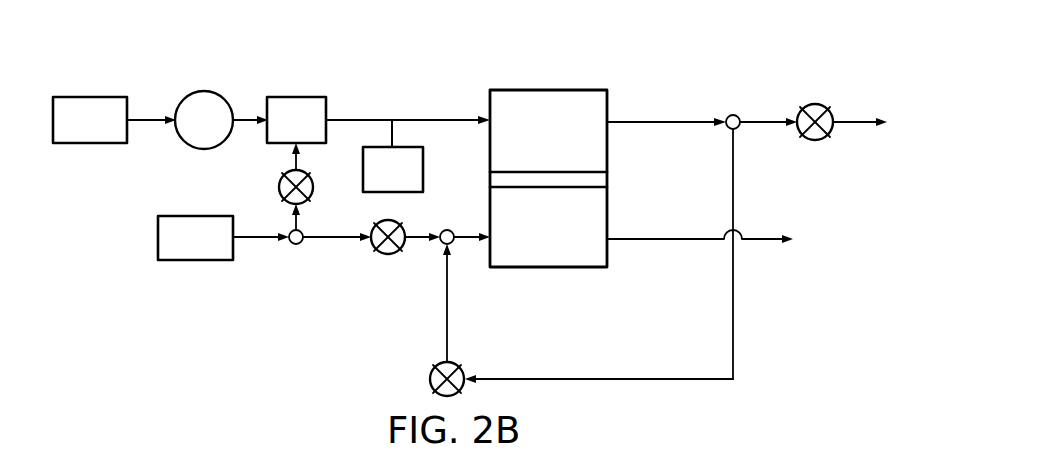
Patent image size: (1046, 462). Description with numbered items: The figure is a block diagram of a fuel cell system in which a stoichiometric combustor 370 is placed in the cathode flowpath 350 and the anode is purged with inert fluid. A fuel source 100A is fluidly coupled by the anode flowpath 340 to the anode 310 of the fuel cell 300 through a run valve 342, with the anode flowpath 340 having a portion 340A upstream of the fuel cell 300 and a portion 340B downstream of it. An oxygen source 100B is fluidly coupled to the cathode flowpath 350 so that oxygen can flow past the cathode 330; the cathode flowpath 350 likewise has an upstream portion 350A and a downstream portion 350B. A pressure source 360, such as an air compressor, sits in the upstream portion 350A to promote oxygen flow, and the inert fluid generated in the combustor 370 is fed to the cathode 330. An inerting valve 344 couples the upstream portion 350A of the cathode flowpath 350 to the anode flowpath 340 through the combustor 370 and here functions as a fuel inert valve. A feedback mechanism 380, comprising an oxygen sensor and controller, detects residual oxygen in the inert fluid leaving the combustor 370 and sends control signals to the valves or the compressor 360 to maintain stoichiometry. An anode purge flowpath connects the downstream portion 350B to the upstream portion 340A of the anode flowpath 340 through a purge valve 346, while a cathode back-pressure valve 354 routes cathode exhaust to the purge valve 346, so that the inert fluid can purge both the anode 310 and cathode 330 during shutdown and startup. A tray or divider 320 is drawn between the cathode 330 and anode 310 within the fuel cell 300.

The fuel source 100A is at (224, 251).
The oxygen source 100B is at (119, 133).
The fuel cell 300 is at (546, 320).
The anode 310 is at (607, 226).
The tray / divider 320 is at (607, 183).
The cathode 330 is at (550, 97).
The anode flowpath 340 is at (331, 240).
The upstream portion of anode flowpath 340A is at (414, 236).
The downstream portion of anode flowpath 340B is at (764, 243).
The run valve 342 is at (388, 254).
The inerting valve 344 is at (279, 187).
The purge valve 346 is at (430, 379).
The cathode flowpath 350 is at (362, 118).
The upstream portion of cathode flowpath 350A is at (426, 118).
The downstream portion of cathode flowpath 350B is at (655, 119).
The cathode back-pressure valve 354 is at (815, 140).
The pressure source 360 is at (203, 96).
The combustor 370 is at (316, 133).
The feedback mechanism 380 is at (413, 182).